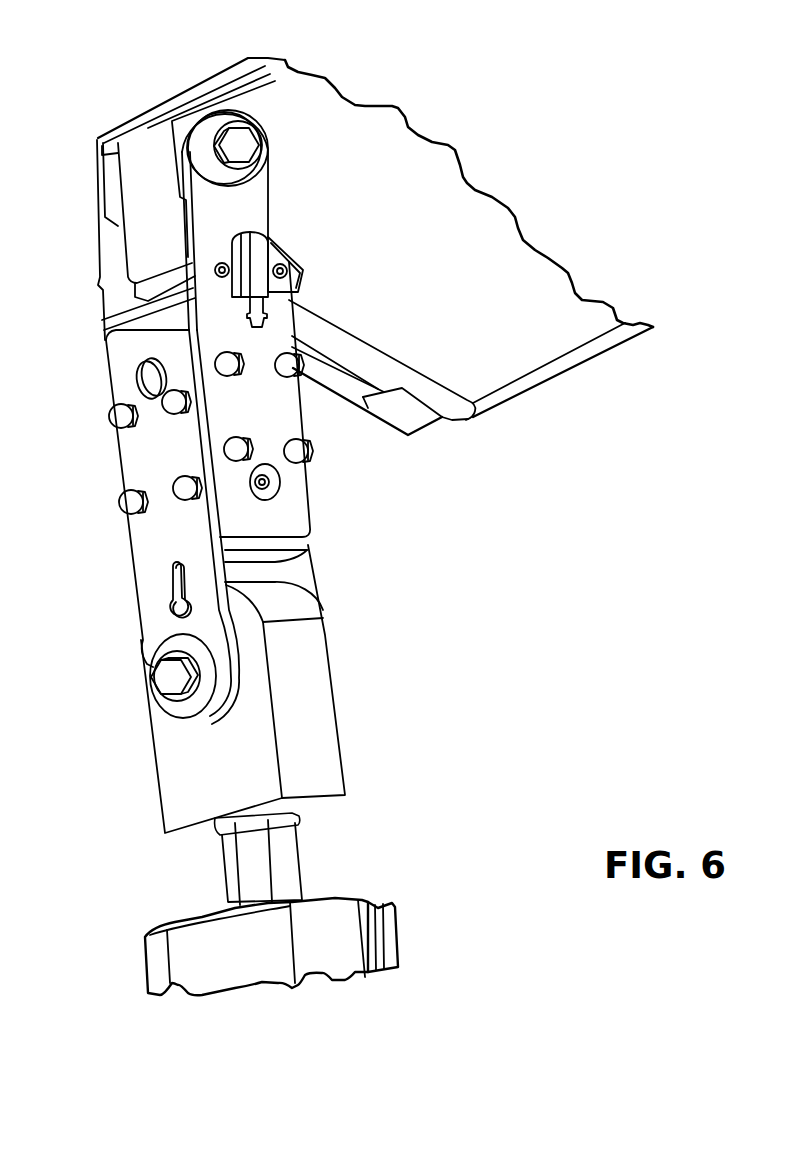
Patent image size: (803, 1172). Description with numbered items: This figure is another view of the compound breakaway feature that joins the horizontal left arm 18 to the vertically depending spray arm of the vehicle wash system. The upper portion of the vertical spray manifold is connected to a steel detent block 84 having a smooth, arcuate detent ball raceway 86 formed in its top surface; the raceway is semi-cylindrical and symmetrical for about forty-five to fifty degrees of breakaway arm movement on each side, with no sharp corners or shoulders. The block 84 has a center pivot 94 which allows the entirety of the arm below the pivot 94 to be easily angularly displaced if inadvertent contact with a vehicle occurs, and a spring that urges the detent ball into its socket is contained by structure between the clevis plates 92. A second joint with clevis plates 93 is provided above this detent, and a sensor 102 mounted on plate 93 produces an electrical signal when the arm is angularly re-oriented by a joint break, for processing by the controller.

The left arm 18 is at (523, 367).
The detent block 84 is at (320, 717).
The detent ball raceway 86 is at (282, 597).
The clevis plates 92 is at (150, 590).
The clevis plates 93 is at (297, 493).
The center pivot 94 is at (163, 682).
The sensor 102 is at (255, 250).